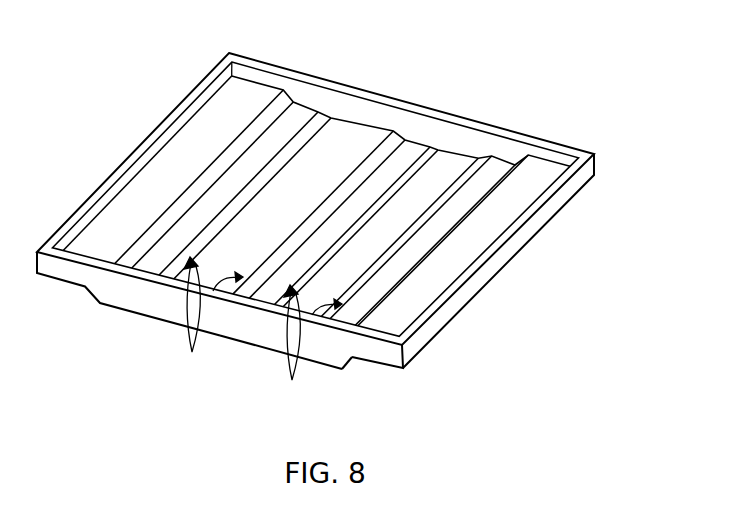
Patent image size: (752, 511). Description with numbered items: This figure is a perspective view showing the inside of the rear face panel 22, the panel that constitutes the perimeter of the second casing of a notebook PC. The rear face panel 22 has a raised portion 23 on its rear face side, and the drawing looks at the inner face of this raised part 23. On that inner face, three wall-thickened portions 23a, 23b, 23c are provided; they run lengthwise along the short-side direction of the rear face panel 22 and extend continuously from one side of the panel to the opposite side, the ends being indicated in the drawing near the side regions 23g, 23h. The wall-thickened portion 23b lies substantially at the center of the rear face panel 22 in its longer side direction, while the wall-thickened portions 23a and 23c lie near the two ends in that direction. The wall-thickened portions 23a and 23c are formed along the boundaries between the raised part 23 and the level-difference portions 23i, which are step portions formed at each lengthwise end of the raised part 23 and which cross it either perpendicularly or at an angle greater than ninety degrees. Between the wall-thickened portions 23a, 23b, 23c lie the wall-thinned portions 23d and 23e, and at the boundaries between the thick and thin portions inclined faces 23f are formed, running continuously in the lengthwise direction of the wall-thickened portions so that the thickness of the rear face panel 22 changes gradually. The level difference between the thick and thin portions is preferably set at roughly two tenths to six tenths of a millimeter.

The rear face panel 22 is at (589, 173).
The raised portion 23 is at (125, 307).
The wall-thickened portion 23a is at (305, 115).
The wall-thickened portion 23b is at (408, 142).
The wall-thickened portion 23c is at (504, 167).
The wall-thinned portion 23d is at (352, 133).
The wall-thinned portion 23e is at (453, 163).
The inclined face 23f is at (262, 334).
The end partition 23g is at (483, 142).
The side wall 23h is at (162, 300).
The level-difference portion 23i is at (197, 190).